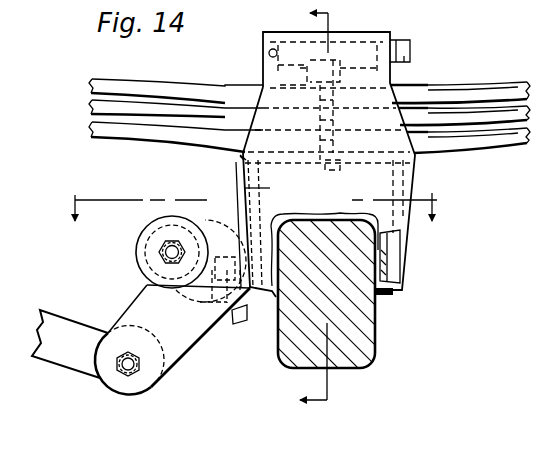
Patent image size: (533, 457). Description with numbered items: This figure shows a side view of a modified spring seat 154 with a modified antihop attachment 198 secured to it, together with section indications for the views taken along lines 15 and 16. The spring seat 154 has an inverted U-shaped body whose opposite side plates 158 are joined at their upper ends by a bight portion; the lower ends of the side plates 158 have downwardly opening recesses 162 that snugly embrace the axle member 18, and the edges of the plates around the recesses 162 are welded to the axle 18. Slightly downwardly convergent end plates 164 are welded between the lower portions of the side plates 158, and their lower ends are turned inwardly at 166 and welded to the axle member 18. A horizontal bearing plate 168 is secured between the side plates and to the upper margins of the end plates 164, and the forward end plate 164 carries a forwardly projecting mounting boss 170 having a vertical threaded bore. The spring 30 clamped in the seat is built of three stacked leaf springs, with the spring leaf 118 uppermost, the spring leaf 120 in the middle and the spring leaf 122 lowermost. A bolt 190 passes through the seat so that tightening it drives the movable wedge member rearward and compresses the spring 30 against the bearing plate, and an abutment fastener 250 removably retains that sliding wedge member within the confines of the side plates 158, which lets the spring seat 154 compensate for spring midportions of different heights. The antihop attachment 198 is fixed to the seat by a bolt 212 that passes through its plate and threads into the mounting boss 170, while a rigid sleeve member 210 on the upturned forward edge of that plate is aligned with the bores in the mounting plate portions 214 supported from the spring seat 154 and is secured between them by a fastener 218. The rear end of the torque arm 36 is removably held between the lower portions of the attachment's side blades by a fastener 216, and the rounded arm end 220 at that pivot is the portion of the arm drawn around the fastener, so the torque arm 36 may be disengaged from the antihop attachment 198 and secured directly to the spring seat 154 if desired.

The section line 15- 15 is at (300, 209).
The section line 16- 16 is at (251, 220).
The axle member 18 is at (362, 331).
The spring 30 is at (480, 96).
The torque arm 36 is at (68, 353).
The spring leaf 118 is at (118, 91).
The spring leaf 120 is at (88, 108).
The spring leaf 122 is at (90, 128).
The spring seat 154 is at (420, 172).
The side plate 158 is at (270, 187).
The recess 162 is at (312, 232).
The end plate 164 is at (238, 213).
The inturned lower end 166 is at (388, 293).
The bearing plate 168 is at (238, 157).
The mounting boss 170 is at (219, 231).
The bolt 190 is at (440, 50).
The antihop attachment 198 is at (195, 358).
The rigid sleeve member 210 is at (145, 250).
The bolt 212 is at (241, 318).
The mounting plate portion 214 is at (242, 158).
The fastener 216 is at (121, 378).
The fastener 218 is at (160, 262).
The rounded arm end 220 is at (172, 379).
The abutment fastener 250 is at (268, 53).